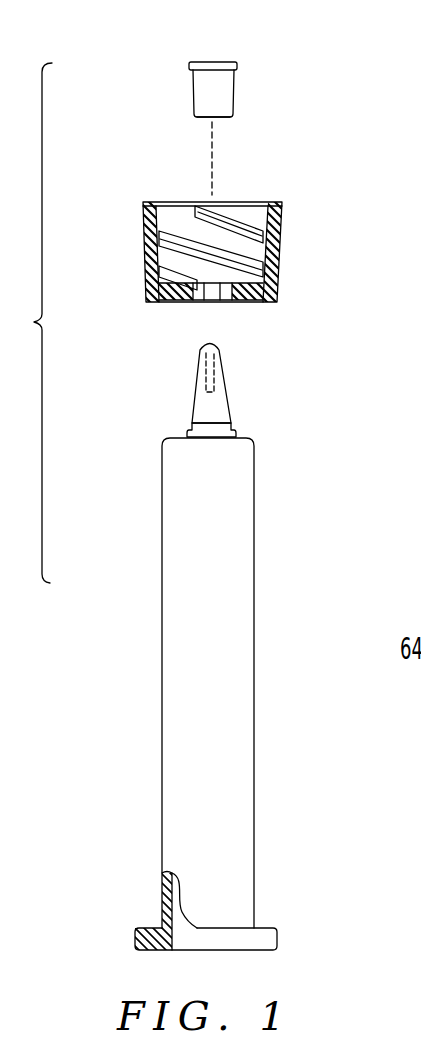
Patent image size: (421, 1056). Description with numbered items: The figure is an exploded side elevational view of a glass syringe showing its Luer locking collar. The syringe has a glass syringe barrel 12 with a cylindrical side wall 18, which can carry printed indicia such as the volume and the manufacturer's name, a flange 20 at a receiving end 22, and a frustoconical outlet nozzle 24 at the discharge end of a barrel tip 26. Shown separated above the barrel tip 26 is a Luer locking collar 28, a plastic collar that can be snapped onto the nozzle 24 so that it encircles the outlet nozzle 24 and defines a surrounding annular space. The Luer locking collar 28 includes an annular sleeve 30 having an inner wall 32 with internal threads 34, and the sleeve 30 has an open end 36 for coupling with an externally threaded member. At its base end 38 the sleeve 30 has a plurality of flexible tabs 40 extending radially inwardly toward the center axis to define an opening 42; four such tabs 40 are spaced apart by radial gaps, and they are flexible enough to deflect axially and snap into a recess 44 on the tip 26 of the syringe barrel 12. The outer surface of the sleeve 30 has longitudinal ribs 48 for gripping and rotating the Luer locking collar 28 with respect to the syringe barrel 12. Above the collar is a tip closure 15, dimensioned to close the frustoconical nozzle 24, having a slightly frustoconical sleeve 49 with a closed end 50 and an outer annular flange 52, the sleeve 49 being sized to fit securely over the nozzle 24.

The glass syringe barrel 12 is at (203, 652).
The tip closure 15 is at (197, 99).
The cylindrical side wall 18 is at (245, 692).
The flange 20 is at (135, 937).
The receiving end 22 is at (203, 910).
The frustoconical outlet nozzle 24 is at (196, 394).
The barrel tip 26 is at (233, 348).
The Luer locking collar 28 is at (215, 257).
The annular sleeve 30 is at (280, 214).
The inner wall 32 is at (177, 211).
The internal threads 34 is at (238, 216).
The open end 36 is at (270, 202).
The base end 38 is at (253, 308).
The flexible tabs 40 is at (165, 303).
The opening 42 is at (196, 306).
The recess 44 is at (234, 428).
The longitudinal ribs 48 is at (282, 275).
The frustoconical sleeve 49 is at (193, 97).
The closed end 50 is at (234, 62).
The outer annular flange 52 is at (232, 118).